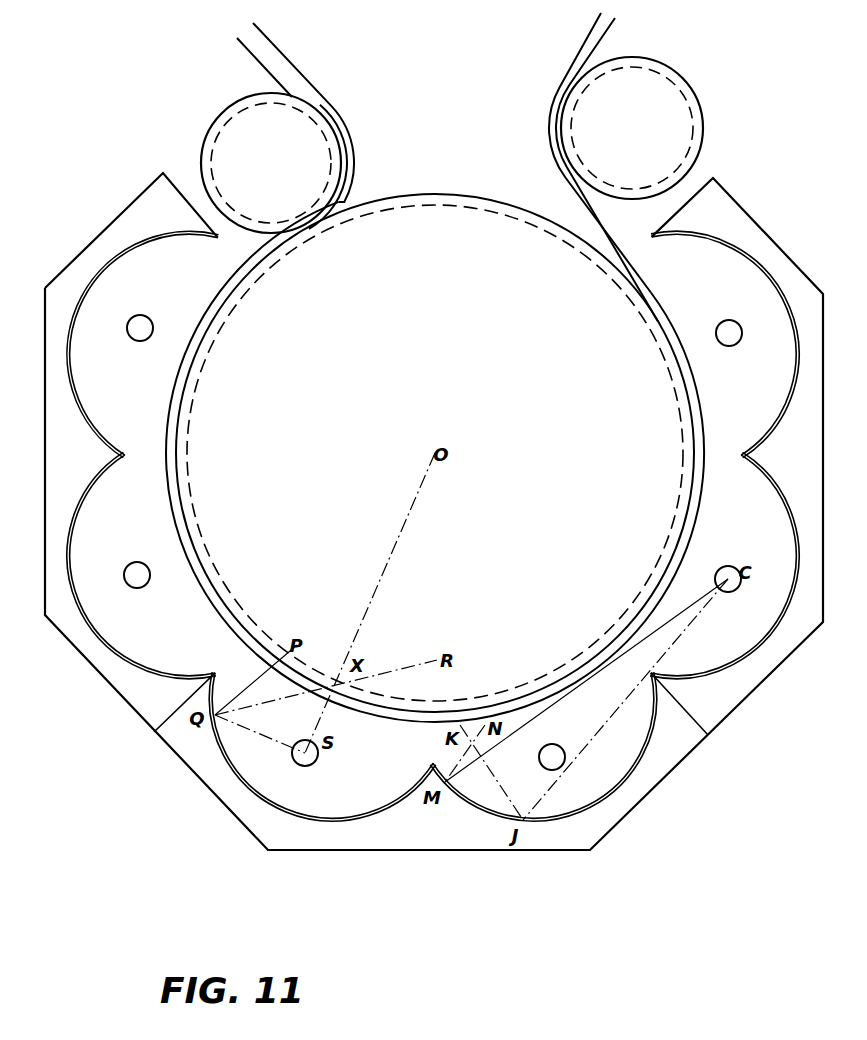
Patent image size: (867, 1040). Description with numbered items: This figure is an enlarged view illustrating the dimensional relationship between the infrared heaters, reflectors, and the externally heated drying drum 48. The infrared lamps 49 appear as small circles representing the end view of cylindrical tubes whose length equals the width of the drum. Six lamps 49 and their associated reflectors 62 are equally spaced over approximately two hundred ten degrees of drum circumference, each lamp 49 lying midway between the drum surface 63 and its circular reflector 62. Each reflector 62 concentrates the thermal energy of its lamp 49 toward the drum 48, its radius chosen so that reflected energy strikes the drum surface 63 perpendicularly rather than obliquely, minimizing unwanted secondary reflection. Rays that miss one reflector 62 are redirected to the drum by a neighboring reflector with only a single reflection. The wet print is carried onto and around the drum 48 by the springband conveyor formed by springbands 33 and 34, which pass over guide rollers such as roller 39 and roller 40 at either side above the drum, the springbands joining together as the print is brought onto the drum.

The springband 33 is at (278, 56).
The springband 34 is at (262, 57).
The roller 39 is at (222, 137).
The right guide roller 40 is at (690, 121).
The drying drum 48 is at (450, 212).
The infrared lamp 49 is at (153, 326).
The reflector 62 is at (96, 388).
The drum surface 63 is at (203, 586).